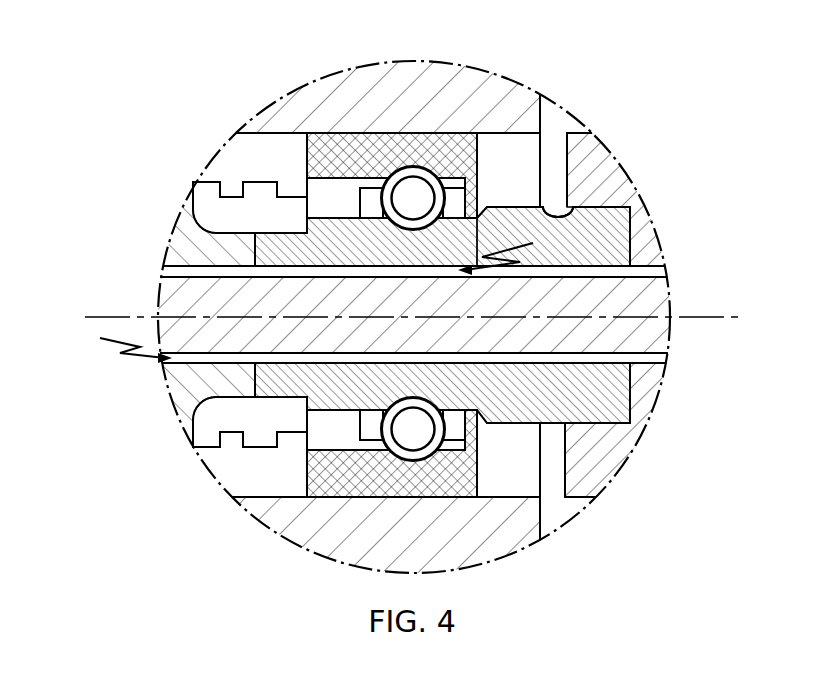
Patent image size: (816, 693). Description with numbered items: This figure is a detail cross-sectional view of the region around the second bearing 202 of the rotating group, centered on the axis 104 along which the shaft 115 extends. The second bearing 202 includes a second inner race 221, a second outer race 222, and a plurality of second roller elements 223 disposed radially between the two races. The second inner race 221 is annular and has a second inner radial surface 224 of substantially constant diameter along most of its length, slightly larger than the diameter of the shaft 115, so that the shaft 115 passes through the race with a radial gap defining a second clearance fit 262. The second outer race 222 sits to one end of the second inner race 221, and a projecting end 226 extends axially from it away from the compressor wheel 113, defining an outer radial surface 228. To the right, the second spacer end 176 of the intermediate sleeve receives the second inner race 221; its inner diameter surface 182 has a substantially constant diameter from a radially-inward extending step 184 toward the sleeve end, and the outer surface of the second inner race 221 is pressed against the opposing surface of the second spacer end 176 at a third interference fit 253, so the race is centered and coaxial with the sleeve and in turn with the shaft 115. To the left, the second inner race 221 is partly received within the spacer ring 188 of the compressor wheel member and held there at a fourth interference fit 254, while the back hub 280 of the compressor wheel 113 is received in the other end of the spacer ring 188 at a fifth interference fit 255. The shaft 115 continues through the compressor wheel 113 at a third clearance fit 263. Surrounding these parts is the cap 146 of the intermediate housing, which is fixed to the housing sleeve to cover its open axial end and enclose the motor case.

The axis 104 is at (709, 314).
The compressor wheel 113 is at (175, 380).
The shaft 115 is at (436, 307).
The cap 146 is at (293, 533).
The second spacer end 176 is at (605, 468).
The inner diameter surface 182 is at (562, 212).
The radially-inward extending step 184 is at (627, 237).
The spacer ring 188 is at (207, 183).
The second bearing 202 is at (333, 112).
The second inner race 221 is at (503, 217).
The second outer race 222 is at (403, 140).
The second roller elements 223 is at (413, 199).
The second inner radial surface 224 is at (558, 268).
The projecting end 226 is at (505, 416).
The outer radial surface 228 is at (603, 207).
The third interference fit 253 is at (614, 428).
The fourth interference fit 254 is at (288, 240).
The fifth interference fit 255 is at (239, 237).
The second clearance fit 262 is at (518, 254).
The third clearance fit 263 is at (111, 344).
The back hub 280 is at (205, 419).